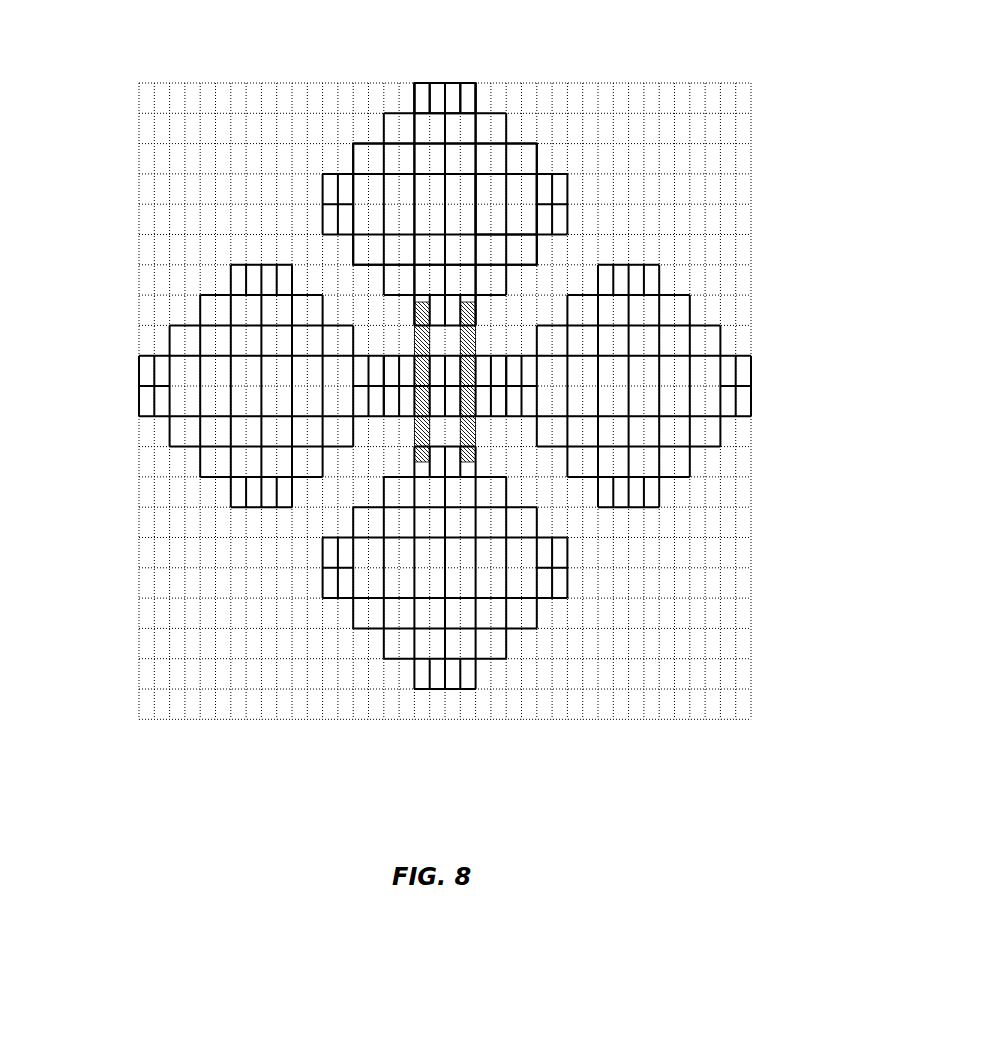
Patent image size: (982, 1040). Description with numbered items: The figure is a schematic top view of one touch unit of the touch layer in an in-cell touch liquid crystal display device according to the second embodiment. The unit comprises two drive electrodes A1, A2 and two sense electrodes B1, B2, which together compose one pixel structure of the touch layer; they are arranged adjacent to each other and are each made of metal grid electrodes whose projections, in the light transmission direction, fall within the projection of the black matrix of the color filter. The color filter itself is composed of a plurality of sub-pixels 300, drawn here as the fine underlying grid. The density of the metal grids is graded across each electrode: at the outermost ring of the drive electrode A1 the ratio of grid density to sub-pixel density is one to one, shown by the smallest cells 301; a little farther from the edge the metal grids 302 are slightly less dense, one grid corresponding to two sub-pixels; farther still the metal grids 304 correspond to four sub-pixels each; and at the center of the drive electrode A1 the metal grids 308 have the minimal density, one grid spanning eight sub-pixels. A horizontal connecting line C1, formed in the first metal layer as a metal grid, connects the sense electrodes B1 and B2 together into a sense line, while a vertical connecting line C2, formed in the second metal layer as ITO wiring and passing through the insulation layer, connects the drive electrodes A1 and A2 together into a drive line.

The sub-pixel 300 is at (146, 95).
The first sub-pixel electrode portion 301 is at (470, 90).
The metal grids 302 is at (530, 152).
The metal grids 304 is at (498, 208).
The metal grids 308 is at (455, 210).
The drive electrode A1 is at (575, 175).
The drive electrode A2 is at (427, 697).
The sense electrode B1 is at (135, 385).
The sense electrode B2 is at (751, 391).
The horizontal connecting line C1 is at (490, 405).
The vertical connecting line C2 is at (420, 432).